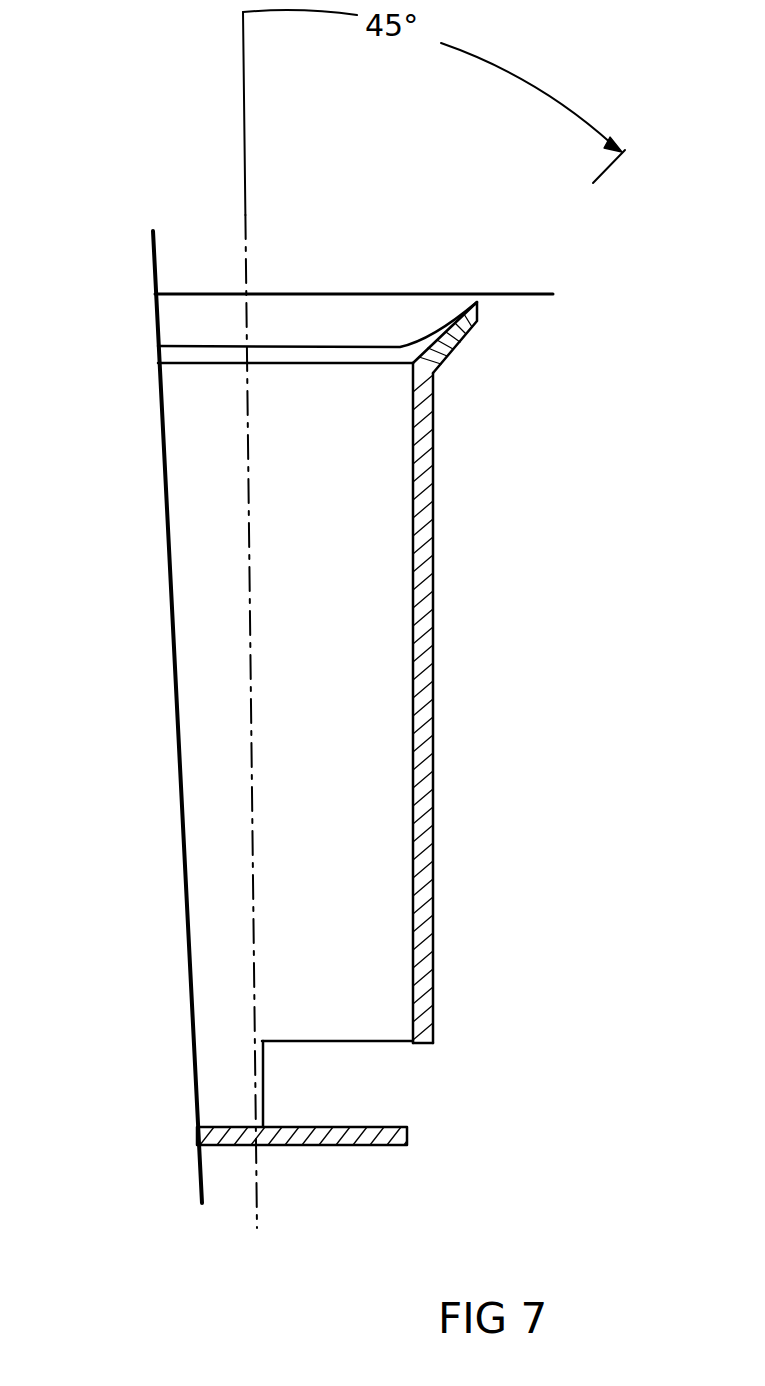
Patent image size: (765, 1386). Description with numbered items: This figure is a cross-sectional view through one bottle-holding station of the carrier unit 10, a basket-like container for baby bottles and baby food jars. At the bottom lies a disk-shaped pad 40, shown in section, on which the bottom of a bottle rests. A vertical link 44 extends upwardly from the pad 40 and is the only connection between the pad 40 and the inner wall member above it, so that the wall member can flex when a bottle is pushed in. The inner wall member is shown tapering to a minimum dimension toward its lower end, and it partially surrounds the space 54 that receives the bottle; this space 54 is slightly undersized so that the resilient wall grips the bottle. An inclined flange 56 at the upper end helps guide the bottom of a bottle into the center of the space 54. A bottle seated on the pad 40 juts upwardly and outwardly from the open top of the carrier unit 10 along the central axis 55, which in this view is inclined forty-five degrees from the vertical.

The carrier unit 10 is at (173, 650).
The pad 40 is at (380, 1127).
The link 44 is at (238, 1080).
The space 54 is at (366, 640).
The central axis 55 is at (251, 796).
The inclined flange 56 is at (457, 348).